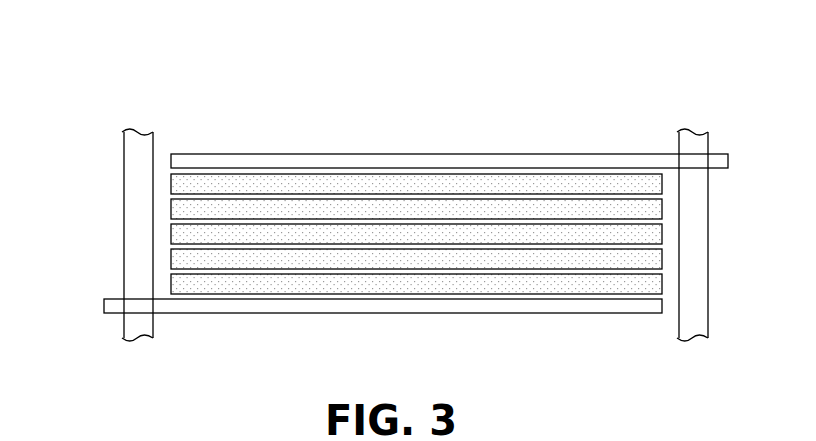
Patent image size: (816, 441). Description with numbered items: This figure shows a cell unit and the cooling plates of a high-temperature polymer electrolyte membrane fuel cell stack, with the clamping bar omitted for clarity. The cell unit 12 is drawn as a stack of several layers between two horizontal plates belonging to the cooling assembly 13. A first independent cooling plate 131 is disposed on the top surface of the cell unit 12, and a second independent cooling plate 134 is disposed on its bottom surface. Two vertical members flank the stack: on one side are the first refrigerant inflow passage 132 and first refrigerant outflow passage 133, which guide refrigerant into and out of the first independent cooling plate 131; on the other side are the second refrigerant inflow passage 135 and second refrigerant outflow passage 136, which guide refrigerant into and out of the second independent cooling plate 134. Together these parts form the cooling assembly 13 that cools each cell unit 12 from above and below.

The cell unit 12 is at (171, 294).
The cooling assembly 13 is at (637, 62).
The first independent cooling plate 131 is at (470, 156).
The first refrigerant inflow passage 132 is at (679, 148).
The first refrigerant outflow passage 133 is at (692, 235).
The second independent cooling plate 134 is at (328, 302).
The second refrigerant inflow passage 135 is at (153, 146).
The second refrigerant outflow passage 136 is at (137, 235).